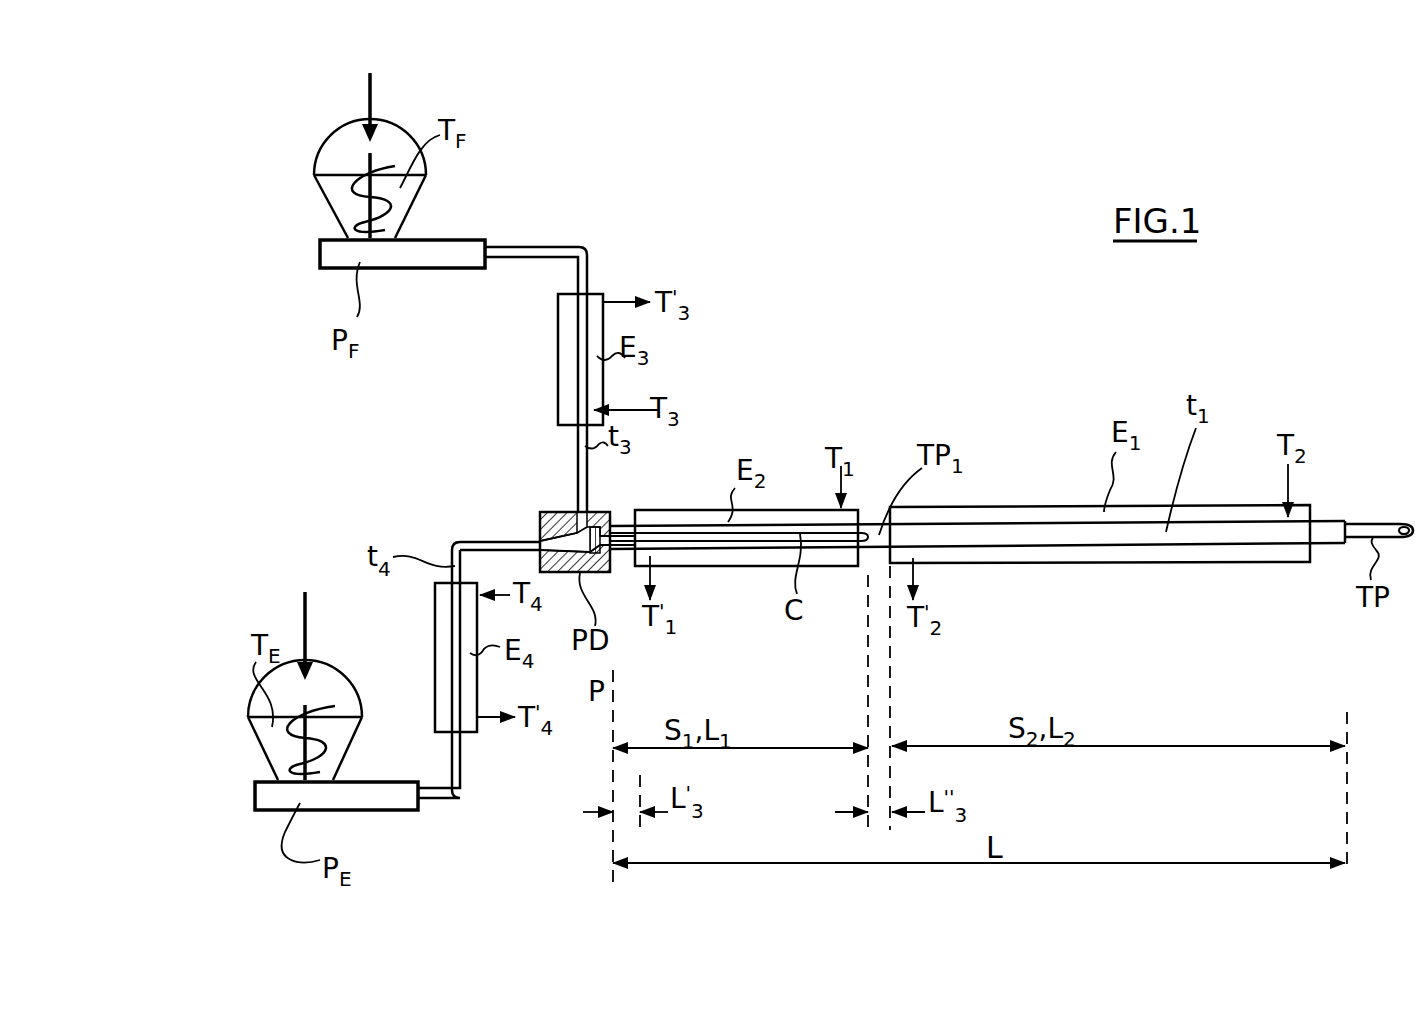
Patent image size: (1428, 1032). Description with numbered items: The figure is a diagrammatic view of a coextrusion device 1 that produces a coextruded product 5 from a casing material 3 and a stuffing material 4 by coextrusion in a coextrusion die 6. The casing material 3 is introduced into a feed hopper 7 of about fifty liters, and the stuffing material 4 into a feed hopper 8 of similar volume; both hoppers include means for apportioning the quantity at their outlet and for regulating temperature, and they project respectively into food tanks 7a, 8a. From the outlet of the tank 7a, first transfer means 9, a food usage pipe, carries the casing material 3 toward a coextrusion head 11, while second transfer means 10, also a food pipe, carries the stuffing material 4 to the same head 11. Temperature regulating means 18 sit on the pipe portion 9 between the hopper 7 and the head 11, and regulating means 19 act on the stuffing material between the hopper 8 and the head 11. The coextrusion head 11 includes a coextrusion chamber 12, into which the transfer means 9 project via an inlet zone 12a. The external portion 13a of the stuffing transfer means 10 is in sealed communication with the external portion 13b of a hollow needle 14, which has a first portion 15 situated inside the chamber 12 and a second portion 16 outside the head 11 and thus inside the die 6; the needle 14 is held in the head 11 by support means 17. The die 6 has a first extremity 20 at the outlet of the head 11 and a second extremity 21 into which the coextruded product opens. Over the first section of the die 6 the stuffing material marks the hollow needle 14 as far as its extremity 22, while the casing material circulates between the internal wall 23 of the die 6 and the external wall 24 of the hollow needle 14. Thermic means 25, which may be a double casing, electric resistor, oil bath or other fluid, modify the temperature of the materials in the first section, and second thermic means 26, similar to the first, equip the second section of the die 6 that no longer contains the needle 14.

The coextrusion device 1 is at (972, 288).
The casing material 3 is at (338, 734).
The stuffing material 4 is at (338, 203).
The coextruded product 5 is at (1383, 524).
The coextrusion die 6 is at (1052, 577).
The feed hopper 7 is at (265, 747).
The food tank 7a is at (387, 812).
The feed hopper 8 is at (410, 211).
The food tank 8a is at (420, 270).
The first transfer means 9 is at (457, 759).
The second transfer means 10 is at (542, 247).
The coextrusion head 11 is at (532, 526).
The coextrusion chamber 12 is at (560, 546).
The inlet zone 12a is at (500, 544).
The external portion of the transfer means 13a is at (597, 509).
The external portion of the hollow needle 13b is at (551, 512).
The hollow needle 14 is at (697, 550).
The first portion of the hollow needle 15 is at (622, 528).
The second portion of the hollow needle 16 is at (739, 602).
The support means 17 is at (607, 573).
The temperature regulating means 18 is at (437, 620).
The temperature regulating means 19 is at (563, 300).
The first extremity of the die 20 is at (618, 532).
The second extremity of the die 21 is at (1348, 523).
The extremity of the hollow needle 22 is at (870, 533).
The internal wall of the die 23 is at (777, 530).
The external wall of the hollow needle 24 is at (757, 544).
The thermic means 25 is at (843, 554).
The second thermic means 26 is at (1253, 548).